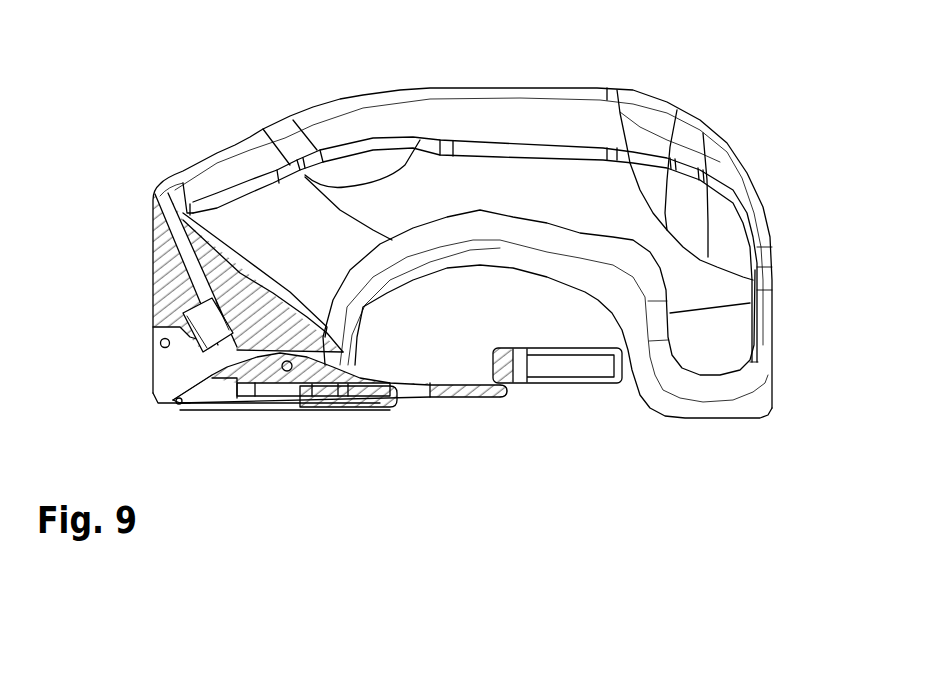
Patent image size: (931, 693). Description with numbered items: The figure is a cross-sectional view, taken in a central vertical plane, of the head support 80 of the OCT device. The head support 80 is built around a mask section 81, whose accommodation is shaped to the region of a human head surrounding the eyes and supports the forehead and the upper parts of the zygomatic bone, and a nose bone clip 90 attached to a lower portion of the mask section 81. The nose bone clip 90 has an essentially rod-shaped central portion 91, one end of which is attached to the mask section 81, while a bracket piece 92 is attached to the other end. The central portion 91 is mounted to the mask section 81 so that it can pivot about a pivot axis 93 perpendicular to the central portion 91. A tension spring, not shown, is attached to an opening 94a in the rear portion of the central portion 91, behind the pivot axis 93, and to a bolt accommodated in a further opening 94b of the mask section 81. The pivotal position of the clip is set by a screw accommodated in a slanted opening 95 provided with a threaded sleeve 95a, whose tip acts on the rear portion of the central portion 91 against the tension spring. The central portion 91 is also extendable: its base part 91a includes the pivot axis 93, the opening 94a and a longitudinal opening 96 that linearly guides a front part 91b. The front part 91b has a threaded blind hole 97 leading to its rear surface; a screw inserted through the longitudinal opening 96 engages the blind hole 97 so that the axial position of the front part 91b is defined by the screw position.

The head support 80 is at (718, 470).
The mask section 81 is at (593, 65).
The nose bone clip 90 is at (380, 474).
The central portion 91 is at (364, 444).
The base part 91a is at (277, 378).
The front part 91b is at (497, 400).
The bracket piece 92 is at (563, 373).
The pivot axis 93 is at (296, 386).
The opening 94a is at (180, 406).
The further opening 94b is at (160, 347).
The slanted opening 95 is at (212, 298).
The threaded sleeve 95a is at (191, 331).
The longitudinal opening 96 is at (288, 372).
The threaded blind hole 97 is at (365, 400).